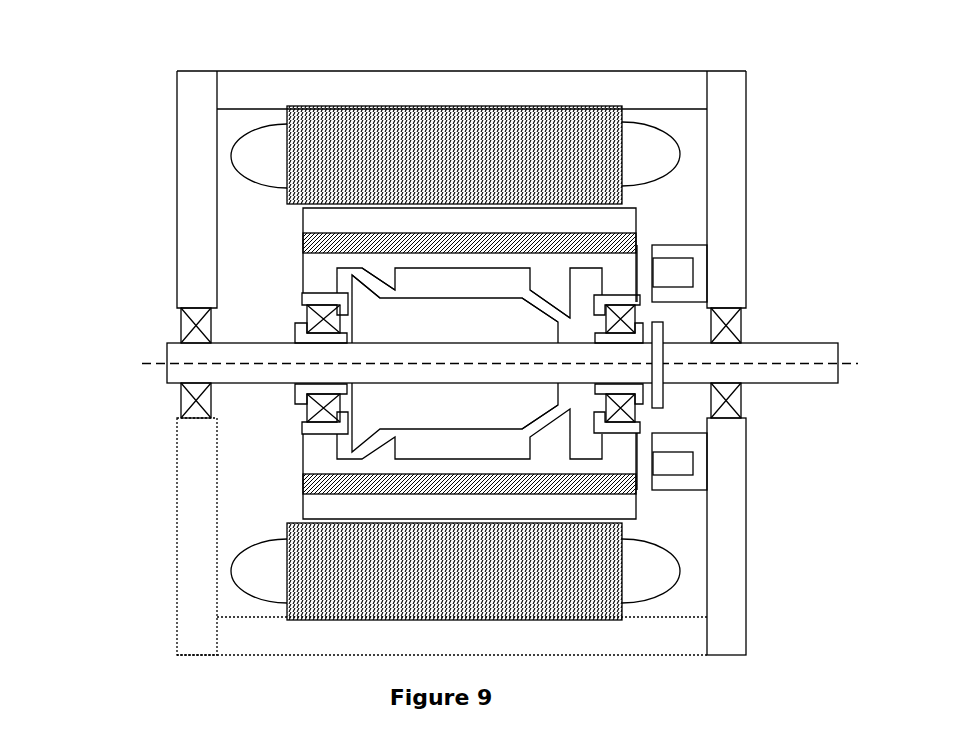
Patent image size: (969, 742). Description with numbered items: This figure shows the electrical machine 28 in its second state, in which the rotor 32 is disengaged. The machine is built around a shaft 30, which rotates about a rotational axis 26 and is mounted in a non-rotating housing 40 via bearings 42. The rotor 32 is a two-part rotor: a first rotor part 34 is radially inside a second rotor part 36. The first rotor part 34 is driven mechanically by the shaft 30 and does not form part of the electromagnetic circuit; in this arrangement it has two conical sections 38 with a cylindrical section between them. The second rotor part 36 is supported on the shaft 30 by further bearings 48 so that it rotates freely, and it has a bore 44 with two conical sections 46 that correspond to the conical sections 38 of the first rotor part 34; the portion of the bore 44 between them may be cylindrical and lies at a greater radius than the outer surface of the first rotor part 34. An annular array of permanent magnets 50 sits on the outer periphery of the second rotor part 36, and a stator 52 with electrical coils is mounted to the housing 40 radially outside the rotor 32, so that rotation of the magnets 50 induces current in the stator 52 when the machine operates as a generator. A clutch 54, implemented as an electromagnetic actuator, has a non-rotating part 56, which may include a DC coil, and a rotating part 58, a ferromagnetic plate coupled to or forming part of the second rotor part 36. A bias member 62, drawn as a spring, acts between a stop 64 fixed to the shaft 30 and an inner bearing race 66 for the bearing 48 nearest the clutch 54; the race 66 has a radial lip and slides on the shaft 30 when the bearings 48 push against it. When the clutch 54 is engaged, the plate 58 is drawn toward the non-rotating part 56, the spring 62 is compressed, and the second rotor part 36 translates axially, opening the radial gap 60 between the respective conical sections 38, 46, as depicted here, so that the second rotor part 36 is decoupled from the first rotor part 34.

The rotational axis 26 is at (778, 364).
The electrical machine 28 is at (116, 107).
The shaft 30 is at (183, 368).
The rotor 32 is at (290, 208).
The first rotor part 34 is at (461, 417).
The second rotor part 36 is at (562, 280).
The conical section 38 is at (368, 296).
The housing 40 is at (182, 192).
The bearings 42 is at (183, 327).
The bore 44 is at (477, 272).
The conical section 46 is at (379, 276).
The further bearings 48 is at (297, 402).
The permanent magnets 50 is at (385, 223).
The stator 52 is at (407, 133).
The clutch 54 is at (707, 497).
The non-rotating part 56 is at (722, 279).
The rotating part 58 is at (637, 245).
The radial gap 60 is at (542, 418).
The bias member 62 is at (645, 393).
The stop 64 is at (657, 337).
The inner bearing race 66 is at (593, 335).